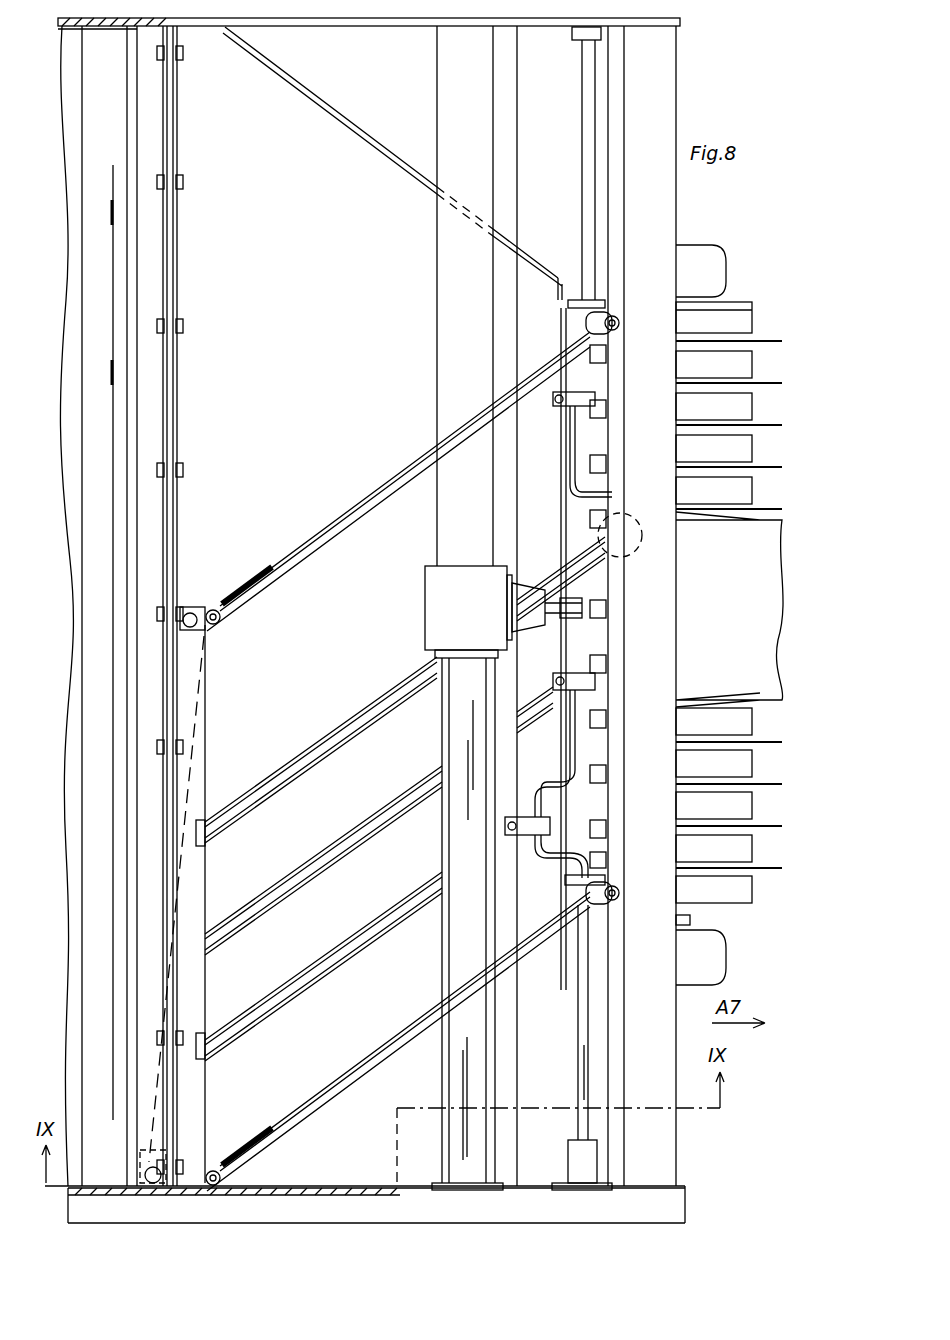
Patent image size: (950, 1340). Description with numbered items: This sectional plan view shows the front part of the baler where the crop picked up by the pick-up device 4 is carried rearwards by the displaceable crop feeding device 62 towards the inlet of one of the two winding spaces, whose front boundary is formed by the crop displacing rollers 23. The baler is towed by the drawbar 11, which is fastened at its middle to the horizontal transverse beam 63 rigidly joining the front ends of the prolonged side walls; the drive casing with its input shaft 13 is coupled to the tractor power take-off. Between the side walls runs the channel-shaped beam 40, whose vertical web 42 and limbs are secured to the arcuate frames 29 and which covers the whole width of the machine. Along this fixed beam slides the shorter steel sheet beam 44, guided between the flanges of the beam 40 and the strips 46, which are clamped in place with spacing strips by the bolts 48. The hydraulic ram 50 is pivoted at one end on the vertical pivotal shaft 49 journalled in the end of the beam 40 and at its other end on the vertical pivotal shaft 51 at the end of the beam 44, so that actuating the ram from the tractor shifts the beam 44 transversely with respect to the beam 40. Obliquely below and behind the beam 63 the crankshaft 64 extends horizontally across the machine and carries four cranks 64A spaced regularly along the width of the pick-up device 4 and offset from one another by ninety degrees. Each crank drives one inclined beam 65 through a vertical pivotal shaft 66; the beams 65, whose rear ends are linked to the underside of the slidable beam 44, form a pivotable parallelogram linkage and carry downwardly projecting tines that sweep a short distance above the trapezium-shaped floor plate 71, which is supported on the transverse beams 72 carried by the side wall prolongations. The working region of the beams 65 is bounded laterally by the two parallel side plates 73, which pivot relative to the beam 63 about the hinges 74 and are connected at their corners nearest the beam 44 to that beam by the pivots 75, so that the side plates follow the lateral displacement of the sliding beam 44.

The pick-up device 4 is at (759, 292).
The drawbar 11 is at (700, 617).
The input shaft 13 is at (548, 616).
The crop displacing rollers 23 is at (100, 207).
The arcuate frames 29 is at (320, 1182).
The beam 40 is at (163, 420).
The vertical web 42 is at (430, 605).
The steel sheet beam 44 is at (222, 766).
The strips 46 is at (178, 354).
The bolts 48 is at (184, 184).
The pivotal shaft 49 is at (150, 1172).
The hydraulic ram 50 is at (205, 697).
The vertical pivotal shaft 51 is at (190, 612).
The crop feeding device 62 is at (350, 712).
The transverse beam 63 is at (655, 1156).
The crankshaft 64 is at (590, 447).
The cranks 64A is at (590, 390).
The beam 65 is at (414, 514).
The vertical pivotal shaft 66 is at (556, 402).
The floor plate 71 is at (348, 175).
The transverse beams 72 is at (505, 176).
The side plates 73 is at (356, 522).
The hinges 74 is at (618, 318).
The pivots 75 is at (215, 608).